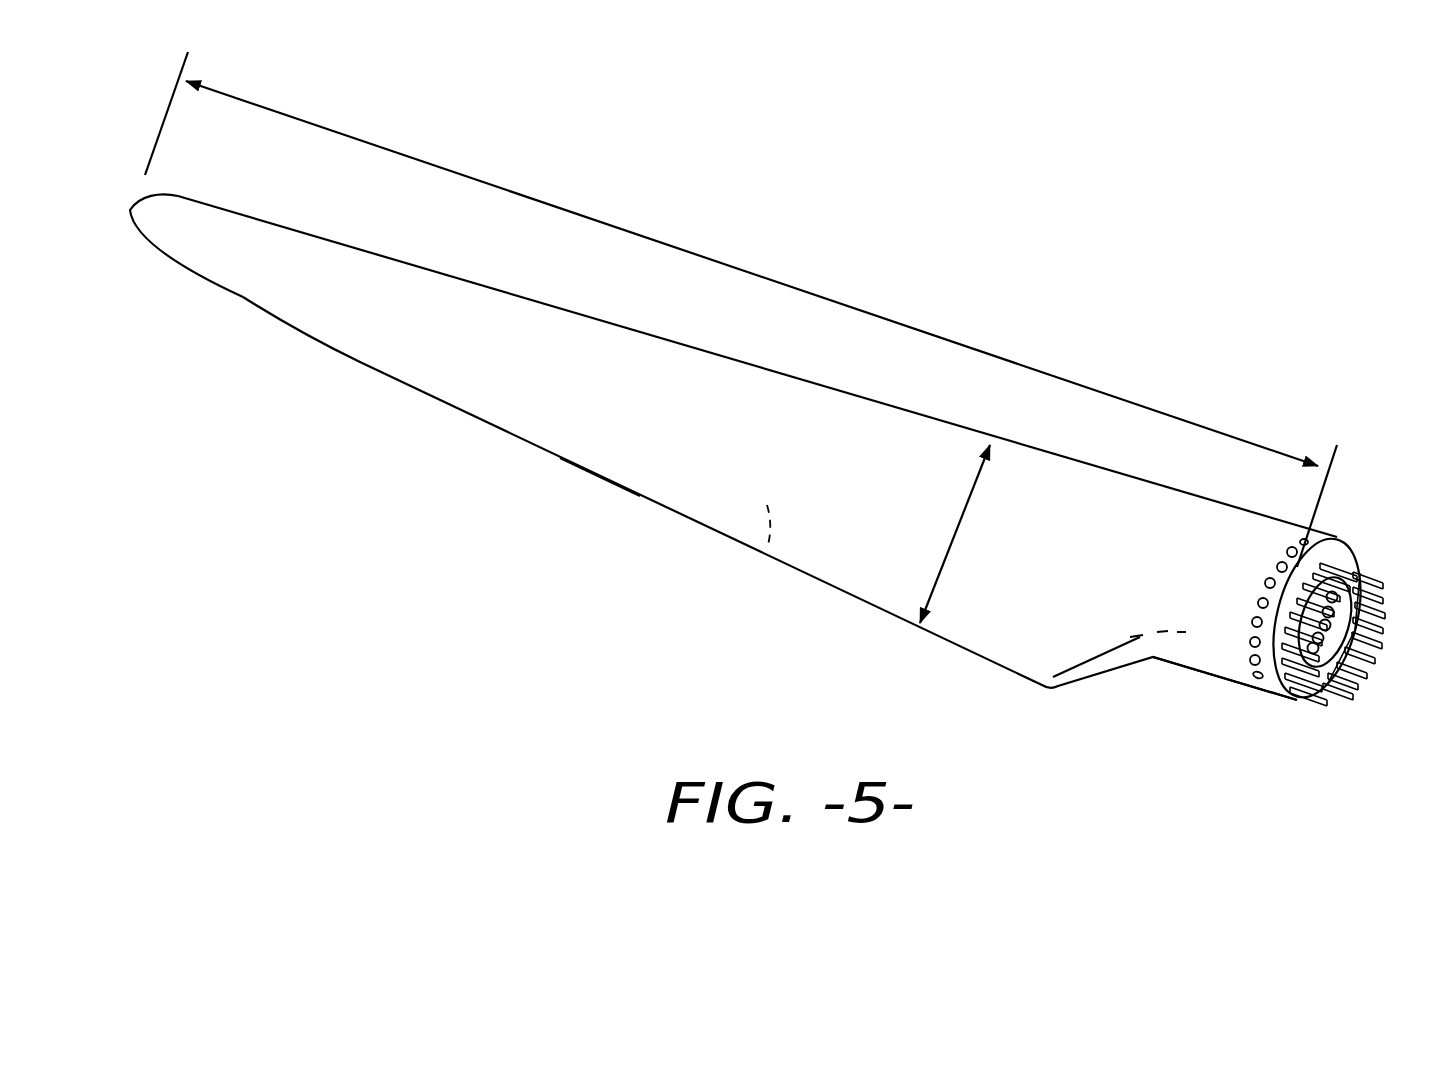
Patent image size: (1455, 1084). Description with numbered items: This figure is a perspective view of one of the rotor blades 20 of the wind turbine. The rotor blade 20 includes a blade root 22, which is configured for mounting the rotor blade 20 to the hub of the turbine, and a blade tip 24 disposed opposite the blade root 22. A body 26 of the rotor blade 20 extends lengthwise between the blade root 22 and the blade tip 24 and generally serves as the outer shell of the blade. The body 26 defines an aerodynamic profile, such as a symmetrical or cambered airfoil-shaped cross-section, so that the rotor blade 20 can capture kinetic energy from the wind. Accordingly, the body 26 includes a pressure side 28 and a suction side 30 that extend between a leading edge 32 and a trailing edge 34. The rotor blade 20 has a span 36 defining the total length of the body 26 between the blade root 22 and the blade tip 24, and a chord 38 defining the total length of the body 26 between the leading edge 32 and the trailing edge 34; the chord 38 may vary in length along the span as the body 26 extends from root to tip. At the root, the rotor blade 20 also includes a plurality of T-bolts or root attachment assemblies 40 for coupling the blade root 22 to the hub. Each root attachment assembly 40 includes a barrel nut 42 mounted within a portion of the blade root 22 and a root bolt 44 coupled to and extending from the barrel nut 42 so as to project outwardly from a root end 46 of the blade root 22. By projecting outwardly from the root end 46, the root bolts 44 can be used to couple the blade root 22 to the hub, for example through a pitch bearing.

The rotor blade 20 is at (767, 411).
The blade root 22 is at (1240, 670).
The blade tip 24 is at (130, 208).
The body 26 is at (588, 350).
The pressure side 28 is at (767, 553).
The suction side 30 is at (467, 373).
The leading edge 32 is at (815, 383).
The trailing edge 34 is at (598, 480).
The span 36 is at (793, 287).
The chord 38 is at (952, 548).
The root attachment assembly 40 is at (1240, 619).
The barrel nut 42 is at (1377, 582).
The root bolt 44 is at (1277, 563).
The root end 46 is at (1303, 703).